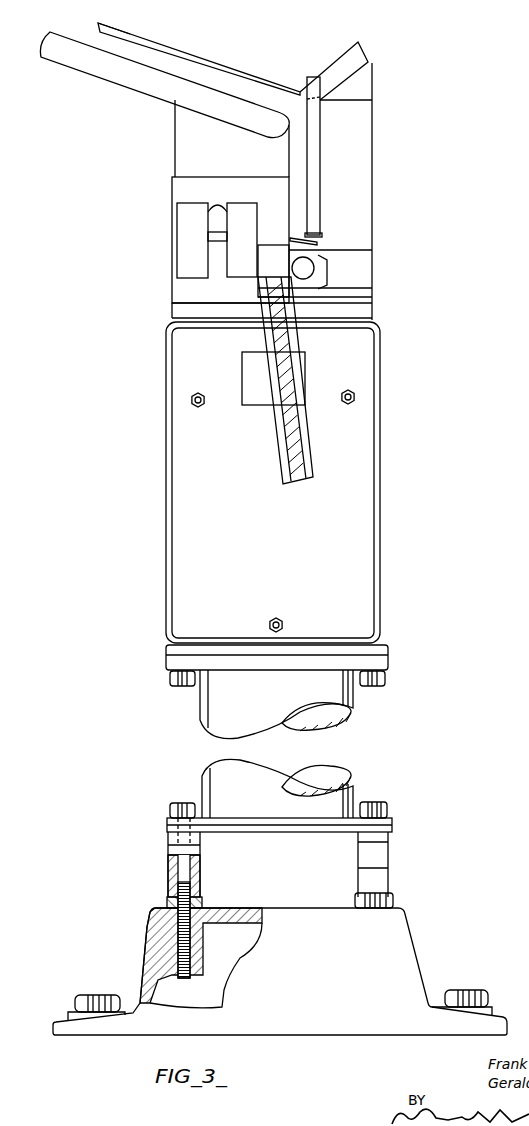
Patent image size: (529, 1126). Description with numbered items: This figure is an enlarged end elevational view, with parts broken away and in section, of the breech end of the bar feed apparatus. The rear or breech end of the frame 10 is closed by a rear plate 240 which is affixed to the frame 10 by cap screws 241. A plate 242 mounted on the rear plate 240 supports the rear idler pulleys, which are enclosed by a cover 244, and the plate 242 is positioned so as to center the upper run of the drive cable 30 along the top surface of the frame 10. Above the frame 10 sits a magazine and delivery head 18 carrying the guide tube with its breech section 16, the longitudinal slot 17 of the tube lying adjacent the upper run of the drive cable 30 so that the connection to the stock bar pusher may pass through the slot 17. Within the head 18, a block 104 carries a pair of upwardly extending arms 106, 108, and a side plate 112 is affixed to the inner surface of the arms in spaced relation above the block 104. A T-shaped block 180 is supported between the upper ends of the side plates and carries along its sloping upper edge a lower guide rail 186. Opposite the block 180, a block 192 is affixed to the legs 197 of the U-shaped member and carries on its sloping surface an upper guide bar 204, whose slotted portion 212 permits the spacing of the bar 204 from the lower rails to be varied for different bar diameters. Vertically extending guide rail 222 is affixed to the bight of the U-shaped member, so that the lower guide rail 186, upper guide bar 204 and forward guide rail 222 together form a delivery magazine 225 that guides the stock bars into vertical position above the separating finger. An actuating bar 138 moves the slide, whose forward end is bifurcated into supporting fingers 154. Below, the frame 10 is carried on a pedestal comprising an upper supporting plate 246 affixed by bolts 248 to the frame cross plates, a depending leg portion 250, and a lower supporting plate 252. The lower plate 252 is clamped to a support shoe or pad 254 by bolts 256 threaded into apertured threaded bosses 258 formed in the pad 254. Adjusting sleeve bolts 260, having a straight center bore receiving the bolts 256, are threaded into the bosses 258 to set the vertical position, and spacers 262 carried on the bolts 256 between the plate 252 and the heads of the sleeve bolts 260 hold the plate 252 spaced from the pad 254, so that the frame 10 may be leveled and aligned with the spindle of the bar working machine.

The frame 10 is at (397, 556).
The breech section 16 is at (325, 267).
The longitudinal slot 17 is at (284, 268).
The magazine and delivery head 18 is at (397, 180).
The drive cable 30 is at (315, 271).
The block 104 is at (272, 298).
The arm 106 is at (242, 240).
The arm 108 is at (192, 240).
The plate 112 is at (230, 240).
The actuating bar 138 is at (202, 242).
The supporting finger 154 is at (311, 240).
The T-shaped block 180 is at (232, 138).
The lower guide rail 186 is at (164, 85).
The block 192 is at (369, 90).
The leg 197 is at (330, 175).
The upper guide bar 204 is at (203, 52).
The portion of guide bar 212 is at (362, 38).
The vertically extending guide rail 222 is at (321, 196).
The delivery magazine 225 is at (97, 42).
The rear plate 240 is at (273, 482).
The cap screw 241 is at (268, 625).
The plate 242 is at (276, 419).
The cover 244 is at (300, 413).
The upper supporting plate 246 is at (389, 664).
The bolt 248 is at (384, 686).
The leg portion 250 is at (276, 744).
The lower supporting plate 252 is at (390, 822).
The support shoe or pad 254 is at (280, 971).
The bolt 256 is at (188, 800).
The threaded boss 258 is at (197, 975).
The adjusting sleeve bolt 260 is at (392, 896).
The spacer 262 is at (389, 861).